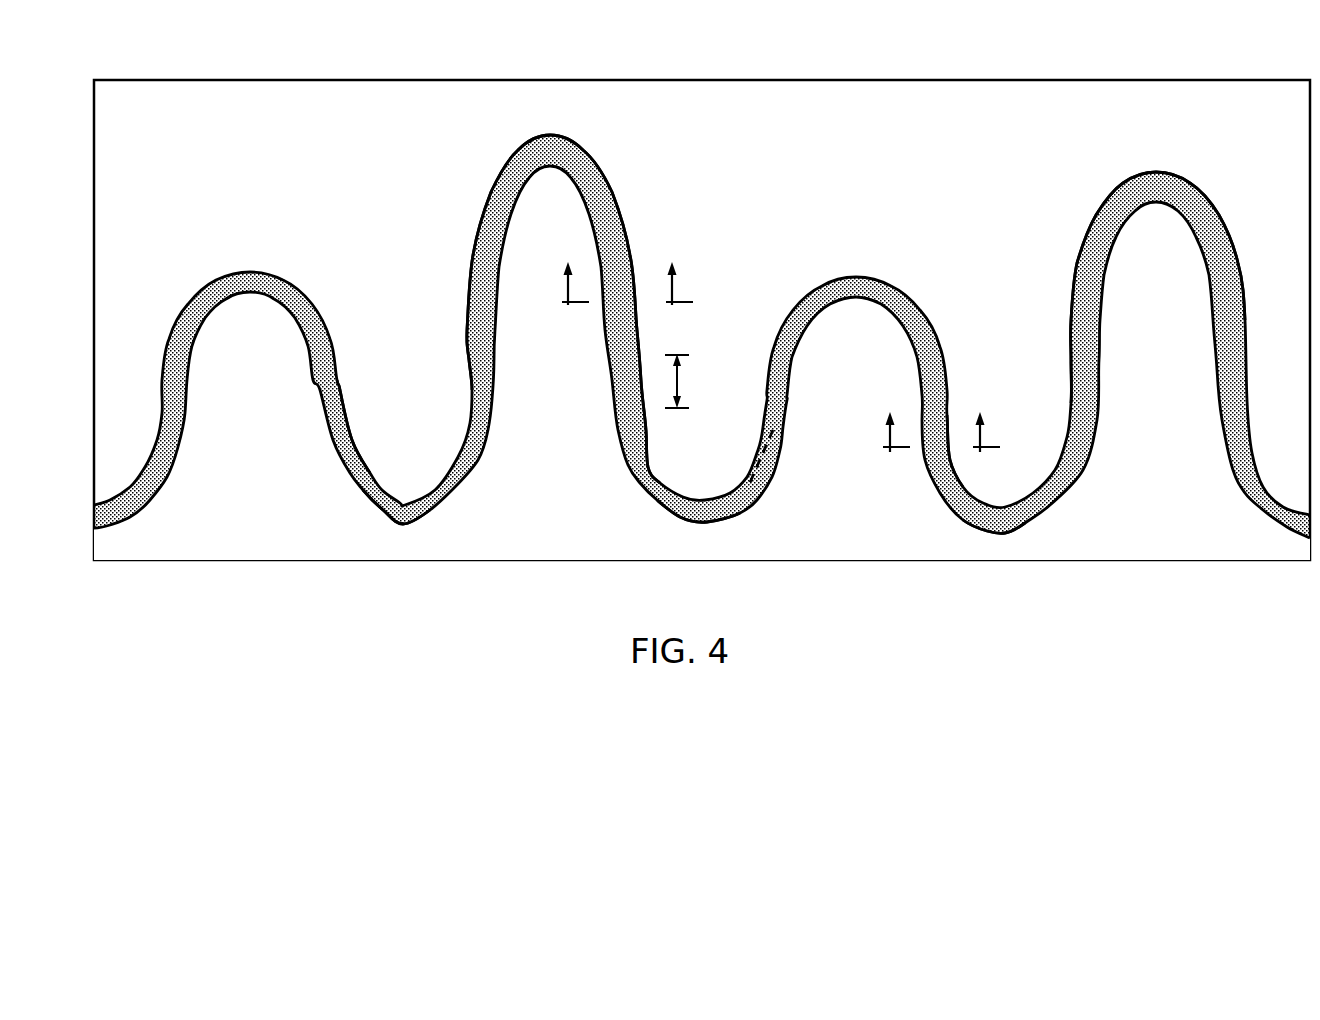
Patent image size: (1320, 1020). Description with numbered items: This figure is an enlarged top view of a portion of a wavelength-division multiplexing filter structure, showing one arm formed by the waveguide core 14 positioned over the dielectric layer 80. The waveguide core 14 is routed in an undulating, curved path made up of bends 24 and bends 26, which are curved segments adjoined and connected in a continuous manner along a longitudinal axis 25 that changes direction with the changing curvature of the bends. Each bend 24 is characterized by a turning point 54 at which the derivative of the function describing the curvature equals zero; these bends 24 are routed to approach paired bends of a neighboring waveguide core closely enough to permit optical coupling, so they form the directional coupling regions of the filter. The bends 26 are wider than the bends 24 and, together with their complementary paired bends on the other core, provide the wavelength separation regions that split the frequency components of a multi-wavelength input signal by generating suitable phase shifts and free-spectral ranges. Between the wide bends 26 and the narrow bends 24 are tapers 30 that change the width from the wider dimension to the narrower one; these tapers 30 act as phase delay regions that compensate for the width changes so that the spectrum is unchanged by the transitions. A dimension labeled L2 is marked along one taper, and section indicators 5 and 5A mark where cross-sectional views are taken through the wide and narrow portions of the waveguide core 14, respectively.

The waveguide core 14 is at (196, 165).
The dielectric layer 80 is at (1247, 135).
The bend 24 is at (353, 490).
The turning point 54 is at (405, 525).
The bend 26 is at (493, 224).
The taper 30 is at (479, 365).
The longitudinal axis 25 is at (757, 466).
The length L2 is at (692, 381).
The section 5 indicator 5 is at (627, 270).
The section 5A indicator 5A is at (936, 418).